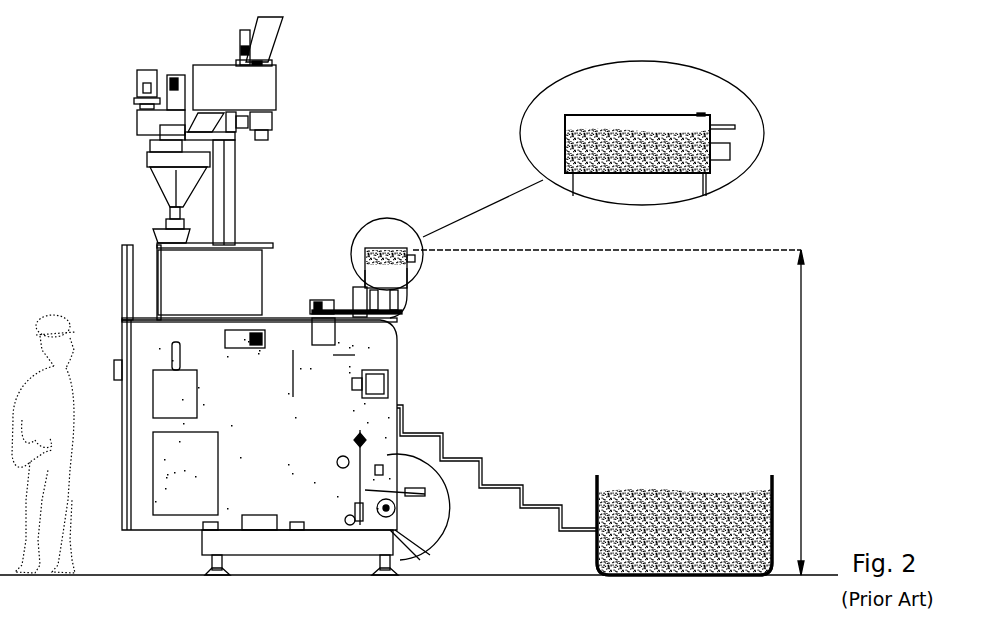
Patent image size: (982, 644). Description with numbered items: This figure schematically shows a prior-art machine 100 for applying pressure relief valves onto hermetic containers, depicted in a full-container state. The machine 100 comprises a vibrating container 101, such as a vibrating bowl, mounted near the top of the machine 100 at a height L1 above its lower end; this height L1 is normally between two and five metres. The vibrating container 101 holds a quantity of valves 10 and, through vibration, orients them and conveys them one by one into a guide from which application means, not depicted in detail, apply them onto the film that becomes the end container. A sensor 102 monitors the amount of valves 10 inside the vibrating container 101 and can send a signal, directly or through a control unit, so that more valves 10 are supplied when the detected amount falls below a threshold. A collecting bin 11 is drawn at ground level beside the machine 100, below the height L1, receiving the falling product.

The machine 100 is at (98, 245).
The vibrating container 101 is at (370, 269).
The sensor 102 is at (548, 350).
The valves 10 is at (388, 250).
The collecting bin 11 is at (596, 487).
The height L1 is at (608, 412).